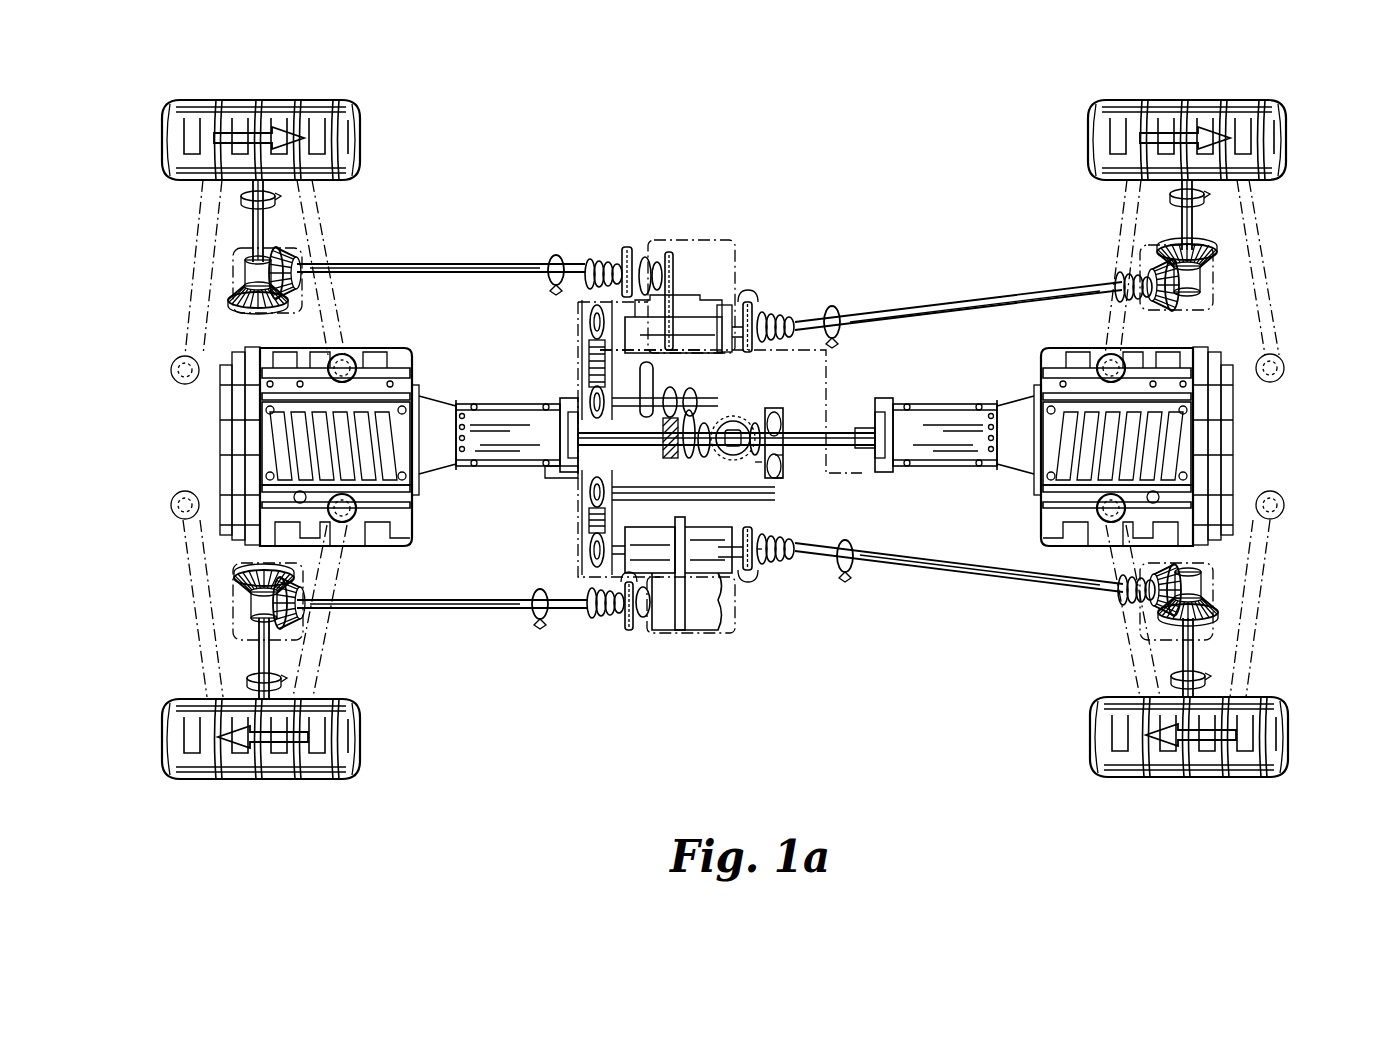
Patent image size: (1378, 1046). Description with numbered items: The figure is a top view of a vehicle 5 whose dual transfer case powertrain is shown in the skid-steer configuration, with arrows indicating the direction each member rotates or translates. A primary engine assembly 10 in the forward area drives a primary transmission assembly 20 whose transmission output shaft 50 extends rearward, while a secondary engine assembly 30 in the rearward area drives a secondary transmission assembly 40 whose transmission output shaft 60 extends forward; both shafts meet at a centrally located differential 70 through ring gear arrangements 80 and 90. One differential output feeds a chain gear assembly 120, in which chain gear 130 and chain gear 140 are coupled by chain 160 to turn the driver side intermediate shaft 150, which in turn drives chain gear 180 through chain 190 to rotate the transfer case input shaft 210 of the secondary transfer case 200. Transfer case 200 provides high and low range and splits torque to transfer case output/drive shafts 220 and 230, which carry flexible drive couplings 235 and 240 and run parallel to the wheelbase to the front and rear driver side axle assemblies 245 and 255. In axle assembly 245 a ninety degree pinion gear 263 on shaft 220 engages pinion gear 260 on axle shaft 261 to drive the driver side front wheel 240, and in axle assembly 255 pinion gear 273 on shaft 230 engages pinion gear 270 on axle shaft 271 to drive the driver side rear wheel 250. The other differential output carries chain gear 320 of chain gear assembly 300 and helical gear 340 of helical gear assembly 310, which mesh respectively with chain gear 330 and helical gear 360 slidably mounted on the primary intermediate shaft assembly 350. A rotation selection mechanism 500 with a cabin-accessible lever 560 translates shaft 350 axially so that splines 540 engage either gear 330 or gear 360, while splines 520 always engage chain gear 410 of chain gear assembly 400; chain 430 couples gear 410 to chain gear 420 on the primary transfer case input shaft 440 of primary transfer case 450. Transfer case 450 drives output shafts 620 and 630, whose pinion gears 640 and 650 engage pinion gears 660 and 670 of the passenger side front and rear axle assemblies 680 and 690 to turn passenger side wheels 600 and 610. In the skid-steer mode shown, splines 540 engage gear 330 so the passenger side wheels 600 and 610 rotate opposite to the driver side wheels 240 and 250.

The vehicle 5 is at (996, 107).
The primary engine assembly 10 is at (228, 352).
The primary transmission assembly 20 is at (470, 405).
The secondary engine assembly 30 is at (1238, 428).
The secondary transmission assembly 40 is at (965, 398).
The transmission output shaft 50 is at (628, 450).
The transmission output shaft 60 is at (852, 430).
The differential 70 is at (737, 418).
The ring gear arrangement 80 is at (690, 467).
The ring gear arrangement 90 is at (757, 465).
The chain gear assembly 120 is at (786, 455).
The chain gear 130 is at (778, 412).
The chain gear 140 is at (786, 478).
The driver side intermediate shaft 150 is at (690, 575).
The chain 160 is at (786, 468).
The chain gear 180 is at (588, 545).
The chain 190 is at (585, 517).
The secondary transfer case 200 is at (678, 632).
The transfer case input shaft 210 is at (598, 628).
The transfer case output/drive shaft 220 is at (445, 616).
The transfer case output/drive shaft 230 is at (1000, 582).
The flexible drive coupling arrangement 235 is at (605, 614).
The driver side front wheel 240 is at (362, 738).
The front driver side axle assembly 245 is at (252, 631).
The driver side rear wheel 250 is at (1290, 731).
The rear driver side axle assembly 255 is at (1206, 612).
The 90 degree pinion gear 260 is at (237, 580).
The axle shaft 261 is at (250, 653).
The 90 degree pinion gear 263 is at (283, 636).
The 90 degree pinion gear 270 is at (1219, 615).
The axle shaft 271 is at (1200, 648).
The 90 degree pinion gear 273 is at (1150, 625).
The chain gear assembly 300 is at (708, 467).
The helical gear assembly 310 is at (743, 582).
The chain gear 320 is at (715, 405).
The chain gear 330 is at (780, 316).
The helical gear 340 is at (589, 490).
The primary intermediate shaft assembly 350 is at (768, 308).
The helical gear 360 is at (552, 476).
The chain gear assembly 400 is at (553, 354).
The chain gear 410 is at (588, 398).
The chain gear 420 is at (588, 318).
The chain 430 is at (587, 348).
The primary transfer case input shaft 440 is at (615, 262).
The primary transfer case 450 is at (619, 387).
The rotation selection mechanism 500 is at (686, 352).
The splines 520 is at (658, 387).
The splines 540 is at (828, 350).
The lever 560 is at (727, 252).
The passenger side front wheel 600 is at (363, 137).
The passenger side rear wheel 610 is at (1288, 137).
The transfer case output/drive shaft 620 is at (478, 262).
The transfer case output/drive shaft 630 is at (1000, 298).
The 90 degree pinion gear 640 is at (287, 248).
The 90 degree pinion gear 650 is at (1218, 308).
The 90 degree pinion gear 660 is at (258, 306).
The 90 degree pinion gear 670 is at (1216, 262).
The front axle assembly 680 is at (258, 262).
The rear axle assembly 690 is at (1214, 262).